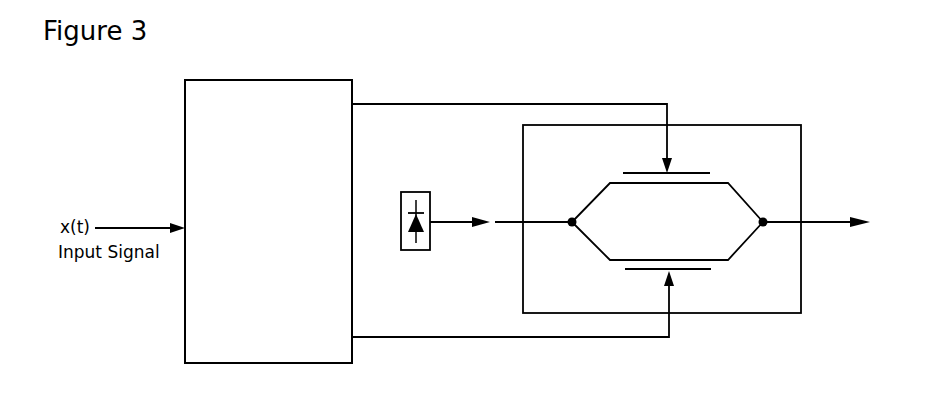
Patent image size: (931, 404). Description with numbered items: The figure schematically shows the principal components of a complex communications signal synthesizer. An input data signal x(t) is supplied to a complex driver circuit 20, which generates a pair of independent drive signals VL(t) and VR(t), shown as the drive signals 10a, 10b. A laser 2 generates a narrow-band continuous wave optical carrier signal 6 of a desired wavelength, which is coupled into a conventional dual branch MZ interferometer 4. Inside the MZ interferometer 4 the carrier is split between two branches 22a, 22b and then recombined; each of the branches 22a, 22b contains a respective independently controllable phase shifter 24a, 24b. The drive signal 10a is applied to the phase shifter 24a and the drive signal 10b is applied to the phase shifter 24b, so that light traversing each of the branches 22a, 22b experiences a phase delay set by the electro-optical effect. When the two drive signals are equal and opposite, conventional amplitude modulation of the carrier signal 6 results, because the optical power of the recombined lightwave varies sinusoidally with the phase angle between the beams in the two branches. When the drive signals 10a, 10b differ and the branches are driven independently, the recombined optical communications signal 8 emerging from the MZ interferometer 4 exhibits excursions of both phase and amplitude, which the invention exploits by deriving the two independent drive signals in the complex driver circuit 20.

The complex driver circuit 20 is at (270, 186).
The laser 2 is at (415, 192).
The continuous wave optical carrier signal 6 is at (458, 222).
The drive signal 10a is at (385, 101).
The drive signal 10b is at (408, 340).
The dual branch MZ interferometer 4 is at (667, 199).
The branch 22a is at (602, 191).
The branch 22b is at (596, 247).
The phase shifter 24a is at (700, 171).
The phase shifter 24b is at (700, 271).
The optical communications signal 8 is at (825, 222).